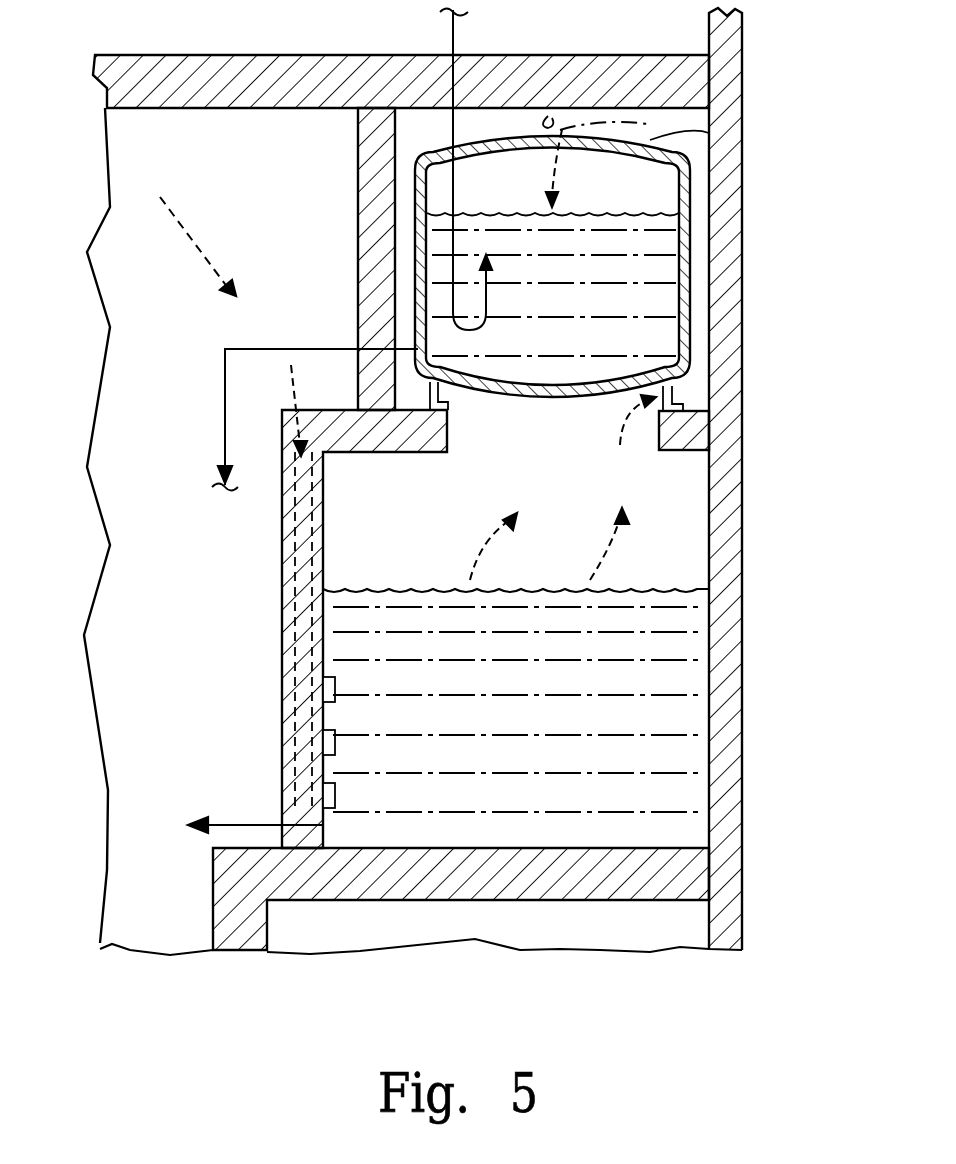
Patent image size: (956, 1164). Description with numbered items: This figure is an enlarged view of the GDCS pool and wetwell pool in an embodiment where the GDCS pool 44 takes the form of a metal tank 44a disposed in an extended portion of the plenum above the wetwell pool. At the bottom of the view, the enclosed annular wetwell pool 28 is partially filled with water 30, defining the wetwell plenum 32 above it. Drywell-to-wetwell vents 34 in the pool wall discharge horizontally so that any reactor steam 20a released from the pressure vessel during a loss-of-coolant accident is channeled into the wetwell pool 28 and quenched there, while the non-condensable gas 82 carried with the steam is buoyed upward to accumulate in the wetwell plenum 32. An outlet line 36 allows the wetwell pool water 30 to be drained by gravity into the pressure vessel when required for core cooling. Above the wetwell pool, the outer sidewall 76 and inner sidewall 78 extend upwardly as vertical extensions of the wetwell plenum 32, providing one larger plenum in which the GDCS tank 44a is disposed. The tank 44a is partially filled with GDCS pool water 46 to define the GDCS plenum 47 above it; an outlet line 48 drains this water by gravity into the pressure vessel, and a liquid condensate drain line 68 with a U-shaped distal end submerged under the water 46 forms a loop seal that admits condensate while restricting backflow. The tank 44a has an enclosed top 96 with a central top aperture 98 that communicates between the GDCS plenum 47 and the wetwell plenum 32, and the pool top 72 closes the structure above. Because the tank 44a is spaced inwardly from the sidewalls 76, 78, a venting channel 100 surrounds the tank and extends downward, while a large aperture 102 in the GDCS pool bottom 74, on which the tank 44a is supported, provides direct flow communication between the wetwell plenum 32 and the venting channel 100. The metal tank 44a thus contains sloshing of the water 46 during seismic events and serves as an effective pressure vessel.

The reactor steam 20a is at (182, 212).
The wetwell pool 28 is at (709, 688).
The wetwell pool water 30 is at (410, 588).
The wetwell plenum 32 is at (368, 510).
The drywell-to-wetwell vents 34 is at (282, 607).
The outlet line 36 is at (250, 825).
The GDCS pool 44 is at (680, 276).
The metal tank 44a is at (690, 200).
The GDCS pool water 46 is at (638, 214).
The GDCS plenum 47 is at (512, 197).
The outlet line 48 is at (262, 349).
The liquid condensate drain line 68 is at (453, 33).
The pool top 72 is at (548, 116).
The pool bottom 74 is at (671, 452).
The outer sidewall 76 is at (742, 262).
The inner sidewall 78 is at (358, 164).
The non-condensable gas 82 is at (500, 532).
The enclosed top 96 is at (709, 133).
The central top aperture 98 is at (560, 150).
The venting channel 100 is at (709, 318).
The aperture 102 is at (656, 440).